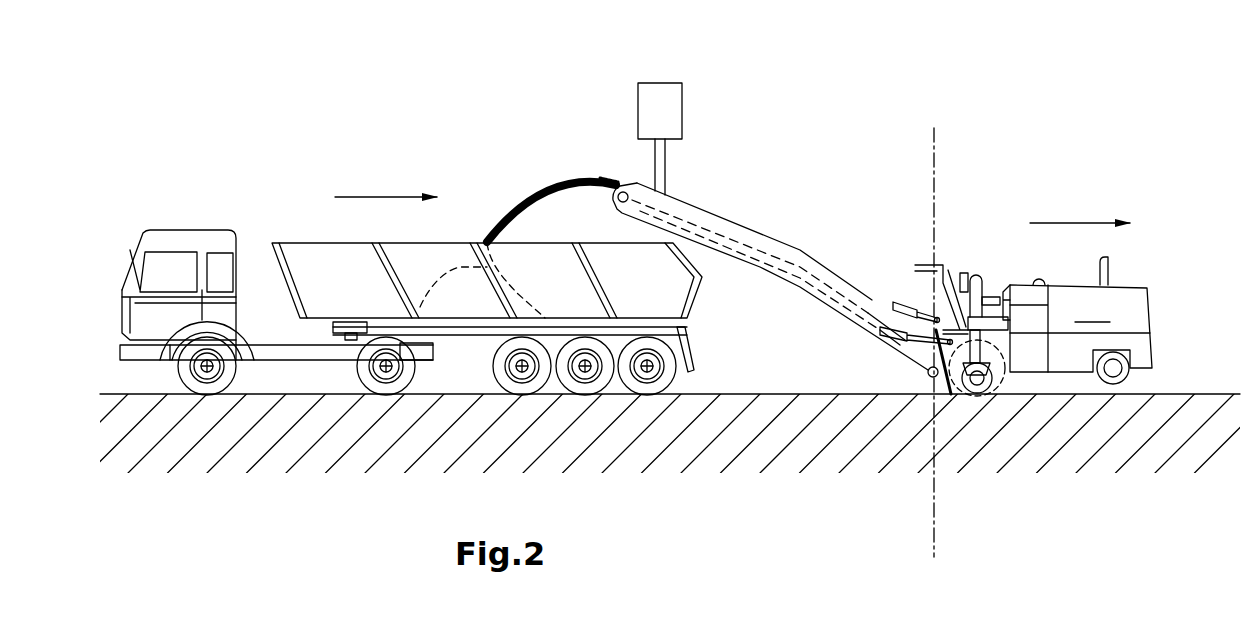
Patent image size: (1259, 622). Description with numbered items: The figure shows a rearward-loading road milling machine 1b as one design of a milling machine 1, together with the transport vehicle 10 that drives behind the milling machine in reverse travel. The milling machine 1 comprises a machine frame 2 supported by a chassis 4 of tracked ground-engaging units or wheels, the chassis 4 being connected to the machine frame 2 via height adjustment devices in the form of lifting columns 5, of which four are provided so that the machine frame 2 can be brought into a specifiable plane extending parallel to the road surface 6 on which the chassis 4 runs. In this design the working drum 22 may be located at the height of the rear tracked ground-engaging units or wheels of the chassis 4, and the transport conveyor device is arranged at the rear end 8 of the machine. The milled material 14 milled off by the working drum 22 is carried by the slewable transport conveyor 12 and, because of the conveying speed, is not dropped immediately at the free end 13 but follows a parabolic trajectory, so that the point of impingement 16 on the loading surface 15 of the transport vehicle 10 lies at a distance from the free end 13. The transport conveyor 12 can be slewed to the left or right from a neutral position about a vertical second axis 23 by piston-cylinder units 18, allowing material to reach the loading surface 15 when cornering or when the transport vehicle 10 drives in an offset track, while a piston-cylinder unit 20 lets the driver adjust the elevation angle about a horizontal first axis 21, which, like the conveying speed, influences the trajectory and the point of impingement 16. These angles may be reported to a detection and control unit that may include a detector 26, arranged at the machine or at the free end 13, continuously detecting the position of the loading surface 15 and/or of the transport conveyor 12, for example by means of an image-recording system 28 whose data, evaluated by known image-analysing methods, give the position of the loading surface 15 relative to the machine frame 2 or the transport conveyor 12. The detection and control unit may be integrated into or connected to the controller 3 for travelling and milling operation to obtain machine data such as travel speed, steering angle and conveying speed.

The milling machine 1 is at (1001, 339).
The rearward-loading milling machine 1b is at (1092, 310).
The machine frame 2 is at (1106, 304).
The controller 3 is at (1066, 220).
The chassis 4 is at (1160, 373).
The lifting columns 5 is at (1018, 352).
The road surface 6 is at (750, 394).
The rear end 8 is at (903, 265).
The transport vehicle 10 is at (411, 333).
The slewable transport conveyor 12 is at (733, 217).
The free end 13 is at (612, 170).
The milled material 14 is at (536, 193).
The loading surface 15 is at (367, 300).
The point of impingement 16 is at (440, 268).
The piston-cylinder units 18 is at (932, 352).
The piston-cylinder unit 20 is at (913, 300).
The horizontal first axis 21 is at (926, 378).
The working drum 22 is at (1005, 375).
The vertical second axis 23 is at (940, 518).
The detector 26 is at (699, 108).
The image-recording system 28 is at (660, 100).